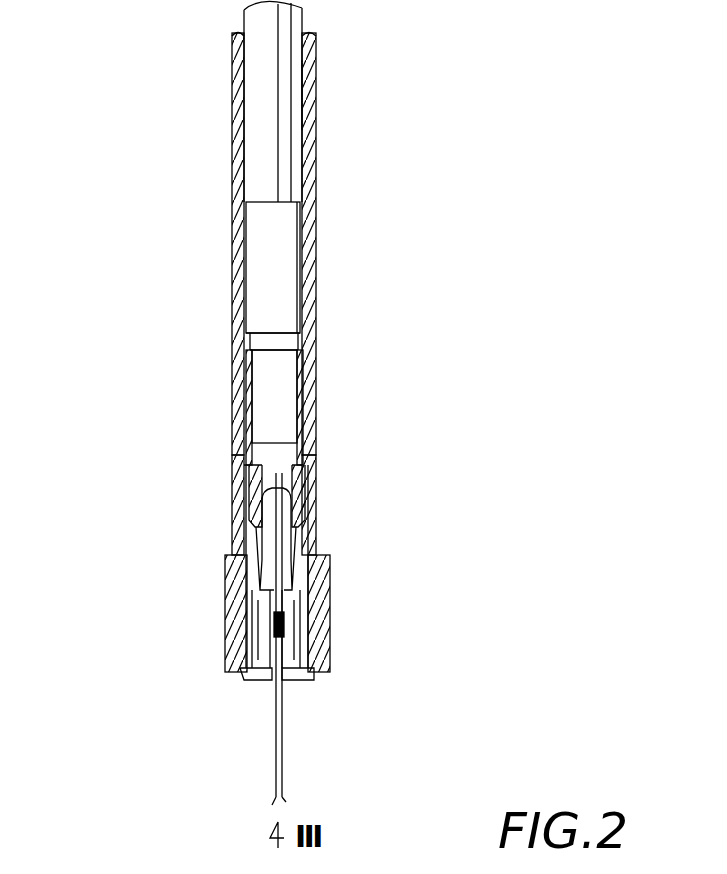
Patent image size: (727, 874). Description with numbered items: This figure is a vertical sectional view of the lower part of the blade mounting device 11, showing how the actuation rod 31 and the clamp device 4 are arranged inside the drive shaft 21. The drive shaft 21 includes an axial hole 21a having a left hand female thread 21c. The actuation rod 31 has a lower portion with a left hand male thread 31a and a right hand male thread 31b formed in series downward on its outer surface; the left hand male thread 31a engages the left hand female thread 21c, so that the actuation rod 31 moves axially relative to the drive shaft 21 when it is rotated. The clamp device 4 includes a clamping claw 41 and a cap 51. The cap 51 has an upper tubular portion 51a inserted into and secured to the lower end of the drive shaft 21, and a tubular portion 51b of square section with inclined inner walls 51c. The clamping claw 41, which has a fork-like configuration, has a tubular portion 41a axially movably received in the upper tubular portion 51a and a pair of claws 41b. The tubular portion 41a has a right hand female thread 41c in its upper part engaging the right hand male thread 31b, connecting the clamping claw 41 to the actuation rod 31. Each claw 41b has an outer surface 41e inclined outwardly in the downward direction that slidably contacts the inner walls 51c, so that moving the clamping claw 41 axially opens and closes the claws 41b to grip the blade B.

The main body 11 is at (398, 208).
The drive shaft 21 is at (317, 128).
The axial hole 21a is at (297, 78).
The left hand female thread 21c is at (298, 320).
The actuation rod 31 is at (258, 22).
The left hand male thread 31a is at (268, 235).
The right hand male thread 31b is at (268, 383).
The clamp device 4 is at (185, 523).
The clamping claw 41 is at (251, 598).
The tubular portion 41a is at (240, 484).
The claws 41b is at (228, 645).
The right hand female thread 41c is at (303, 412).
The outer surface 41e is at (228, 622).
The cap 51 is at (294, 591).
The upper tubular portion 51a is at (310, 500).
The tubular portion 51b is at (330, 568).
The inner walls 51c is at (240, 672).
The needle B is at (283, 765).